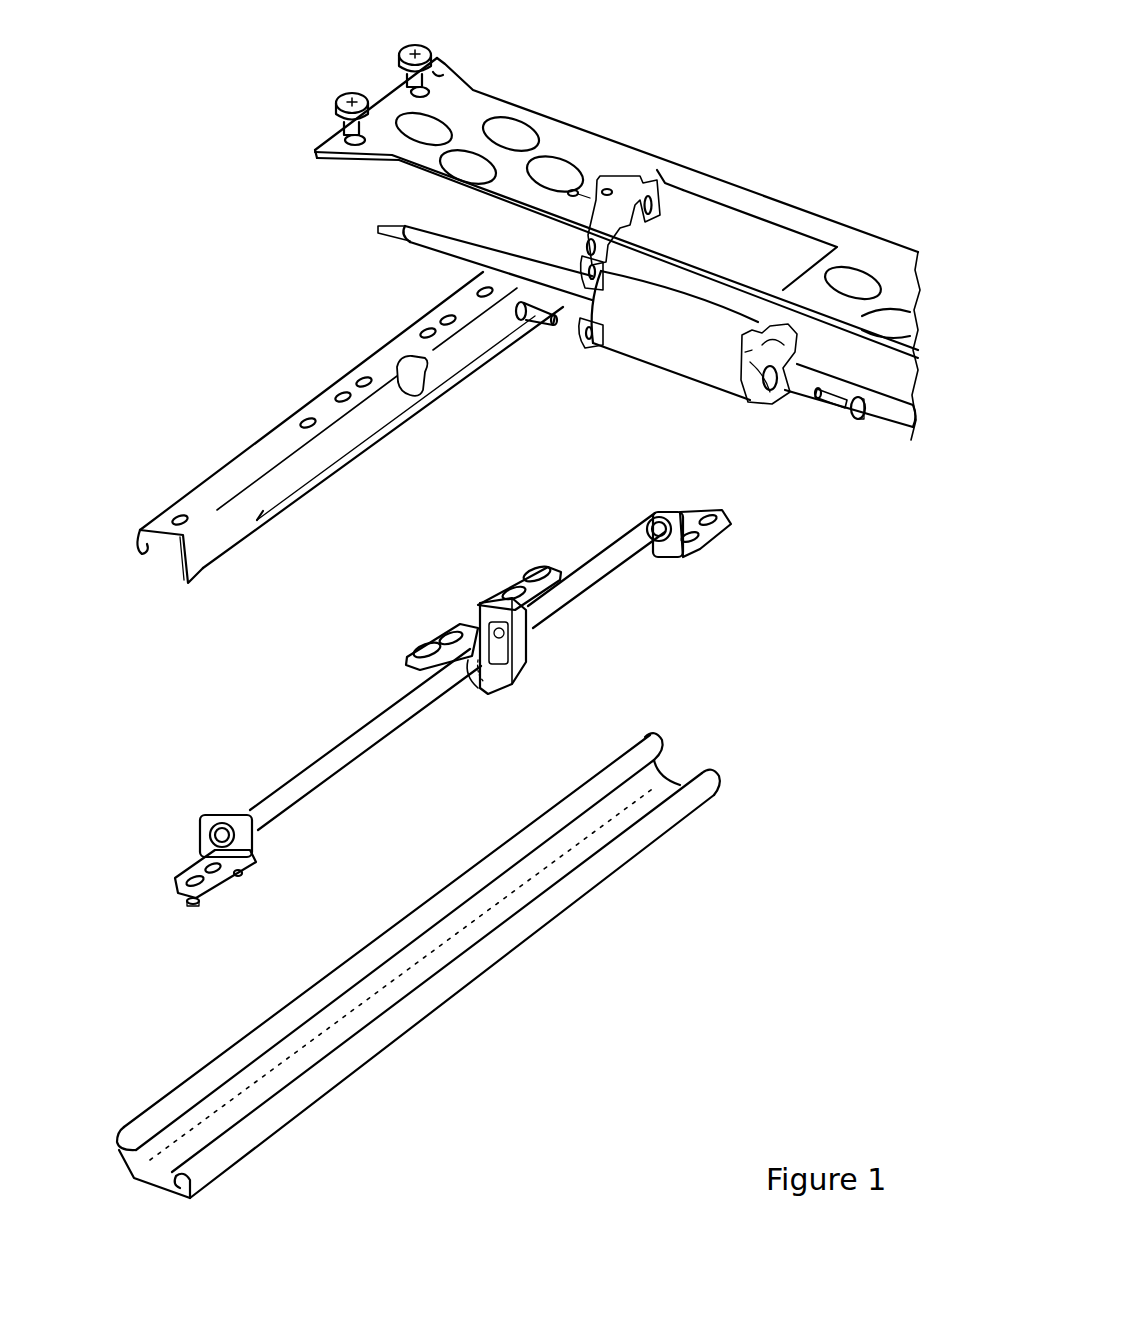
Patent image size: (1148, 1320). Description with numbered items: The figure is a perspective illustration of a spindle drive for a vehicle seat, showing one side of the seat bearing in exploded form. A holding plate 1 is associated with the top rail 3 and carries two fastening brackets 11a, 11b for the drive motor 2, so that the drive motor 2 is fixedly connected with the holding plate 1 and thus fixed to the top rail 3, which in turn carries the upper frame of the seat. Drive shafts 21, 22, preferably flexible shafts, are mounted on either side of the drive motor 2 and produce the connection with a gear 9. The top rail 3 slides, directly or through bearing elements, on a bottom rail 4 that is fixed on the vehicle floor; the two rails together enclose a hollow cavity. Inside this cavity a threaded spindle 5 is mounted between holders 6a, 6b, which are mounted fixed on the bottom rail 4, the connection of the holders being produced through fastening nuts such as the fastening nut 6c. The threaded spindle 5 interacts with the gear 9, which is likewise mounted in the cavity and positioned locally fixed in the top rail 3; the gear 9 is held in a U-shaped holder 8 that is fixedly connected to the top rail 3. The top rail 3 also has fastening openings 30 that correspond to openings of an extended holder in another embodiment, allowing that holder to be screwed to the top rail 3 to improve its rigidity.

The holding plate 1 is at (557, 140).
The fastening bracket 11a is at (590, 250).
The fastening bracket 11b is at (789, 320).
The drive motor 2 is at (687, 358).
The drive shaft 21 is at (413, 240).
The drive shaft 22 is at (883, 403).
The top rail 3 is at (445, 358).
The fastening openings 30 is at (360, 376).
The bottom rail 4 is at (621, 857).
The threaded spindle 5 is at (357, 743).
The holder 6a is at (673, 517).
The holder 6b is at (220, 885).
The fastening nut 6c is at (653, 517).
The U-shaped holder 8 is at (497, 598).
The gear 9 is at (550, 652).